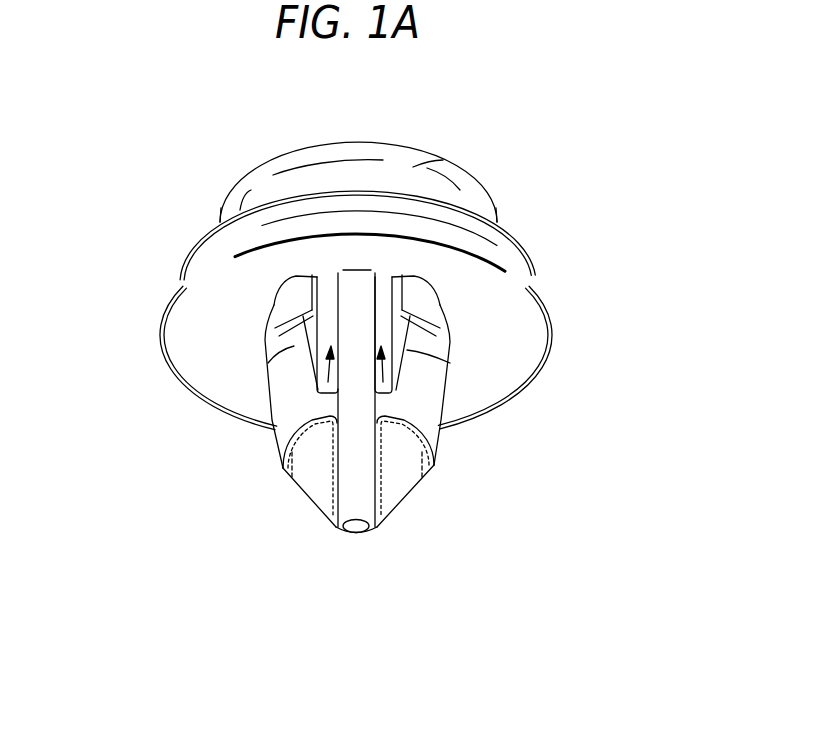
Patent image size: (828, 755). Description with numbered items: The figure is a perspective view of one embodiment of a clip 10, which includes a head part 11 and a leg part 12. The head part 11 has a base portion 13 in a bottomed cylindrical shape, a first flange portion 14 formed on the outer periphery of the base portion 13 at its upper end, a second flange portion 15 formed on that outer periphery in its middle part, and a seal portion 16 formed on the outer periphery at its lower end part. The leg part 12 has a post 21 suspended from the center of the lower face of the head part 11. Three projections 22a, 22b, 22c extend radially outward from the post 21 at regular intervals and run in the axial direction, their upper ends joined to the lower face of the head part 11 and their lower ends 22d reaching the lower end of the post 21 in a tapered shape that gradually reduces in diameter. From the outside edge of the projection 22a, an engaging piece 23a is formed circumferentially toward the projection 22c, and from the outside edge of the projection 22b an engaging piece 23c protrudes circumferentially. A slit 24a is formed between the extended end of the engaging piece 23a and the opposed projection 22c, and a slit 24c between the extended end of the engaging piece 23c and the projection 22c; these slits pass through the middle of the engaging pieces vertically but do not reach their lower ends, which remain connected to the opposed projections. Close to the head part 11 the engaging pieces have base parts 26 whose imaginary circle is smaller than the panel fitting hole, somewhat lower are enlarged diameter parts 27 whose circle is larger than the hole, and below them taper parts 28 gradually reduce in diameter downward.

The clip 10 is at (158, 163).
The head part 11 is at (613, 266).
The leg part 12 is at (553, 437).
The base portion 13 is at (432, 183).
The first flange portion 14 is at (403, 143).
The second flange portion 15 is at (520, 245).
The seal portion 16 is at (533, 337).
The post 21 is at (356, 530).
The projection 22a is at (308, 472).
The projection 22b is at (402, 465).
The projection 22c is at (350, 287).
The lower ends of projections 22d is at (303, 505).
The engaging piece 23a is at (300, 340).
The engaging piece 23c is at (433, 370).
The slit 24a is at (327, 373).
The slit 24c is at (380, 362).
The base parts 26 is at (277, 305).
The enlarged diameter parts 27 is at (278, 329).
The taper parts 28 is at (270, 440).